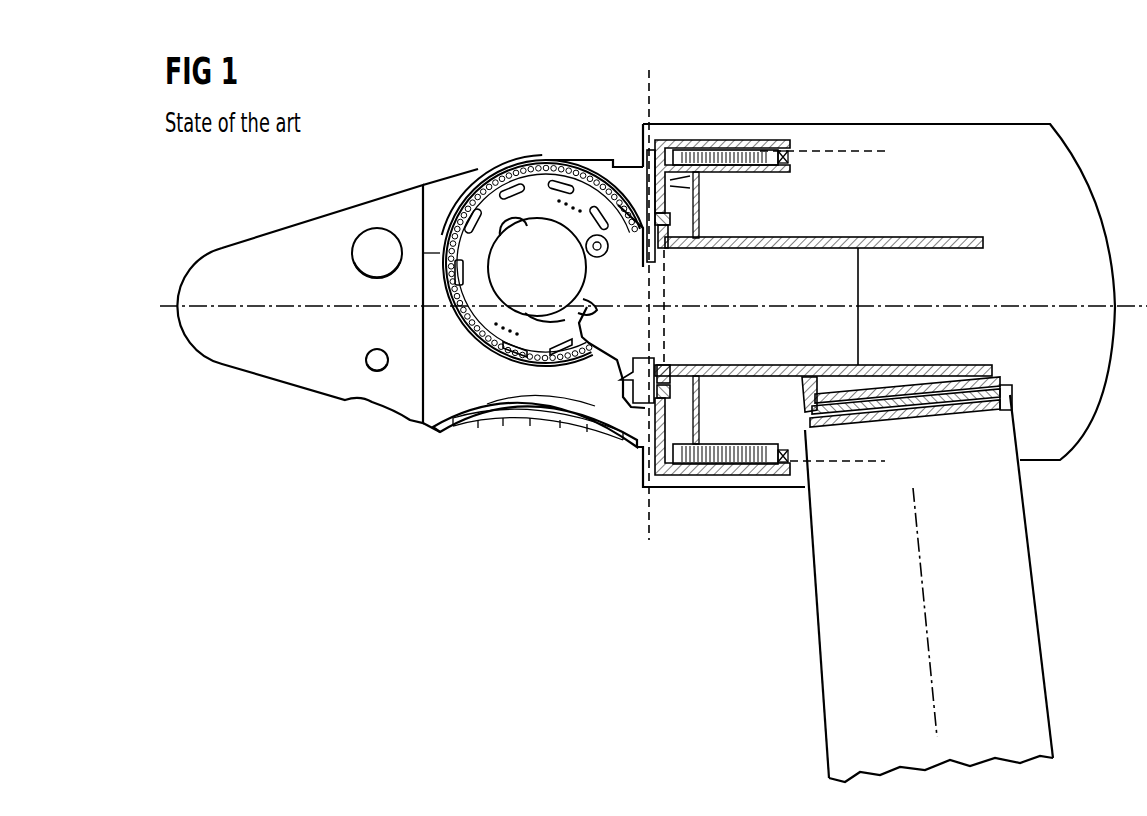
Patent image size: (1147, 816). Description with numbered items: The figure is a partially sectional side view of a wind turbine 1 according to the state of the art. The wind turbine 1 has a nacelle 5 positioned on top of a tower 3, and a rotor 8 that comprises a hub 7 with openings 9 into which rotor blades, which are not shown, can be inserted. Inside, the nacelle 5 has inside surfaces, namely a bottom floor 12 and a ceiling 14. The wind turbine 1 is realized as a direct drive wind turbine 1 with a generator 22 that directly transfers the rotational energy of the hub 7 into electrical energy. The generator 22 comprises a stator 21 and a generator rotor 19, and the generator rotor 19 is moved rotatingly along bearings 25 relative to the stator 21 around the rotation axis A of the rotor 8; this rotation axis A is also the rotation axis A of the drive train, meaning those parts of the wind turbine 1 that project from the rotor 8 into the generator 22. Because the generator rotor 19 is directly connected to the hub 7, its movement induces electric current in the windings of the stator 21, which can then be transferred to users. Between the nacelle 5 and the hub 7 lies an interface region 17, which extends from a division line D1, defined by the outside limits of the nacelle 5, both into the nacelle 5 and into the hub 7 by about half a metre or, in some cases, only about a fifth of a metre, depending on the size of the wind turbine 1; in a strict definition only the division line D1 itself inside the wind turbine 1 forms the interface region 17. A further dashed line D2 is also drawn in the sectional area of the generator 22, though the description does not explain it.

The wind turbine 1 is at (1017, 110).
The tower 3 is at (1025, 570).
The nacelle 5 is at (1090, 183).
The hub 7 is at (456, 176).
The rotor 8 is at (517, 128).
The openings 9 is at (534, 225).
The bottom floor 12 is at (885, 362).
The ceiling 14 is at (928, 250).
The interface region 17 is at (655, 301).
The generator rotor 19 is at (693, 476).
The stator 21 is at (737, 443).
The generator 22 is at (757, 490).
The bearings 25 is at (784, 449).
The division line D1 is at (655, 90).
The diameter D2 is at (856, 153).
The rotation axis A is at (1048, 306).